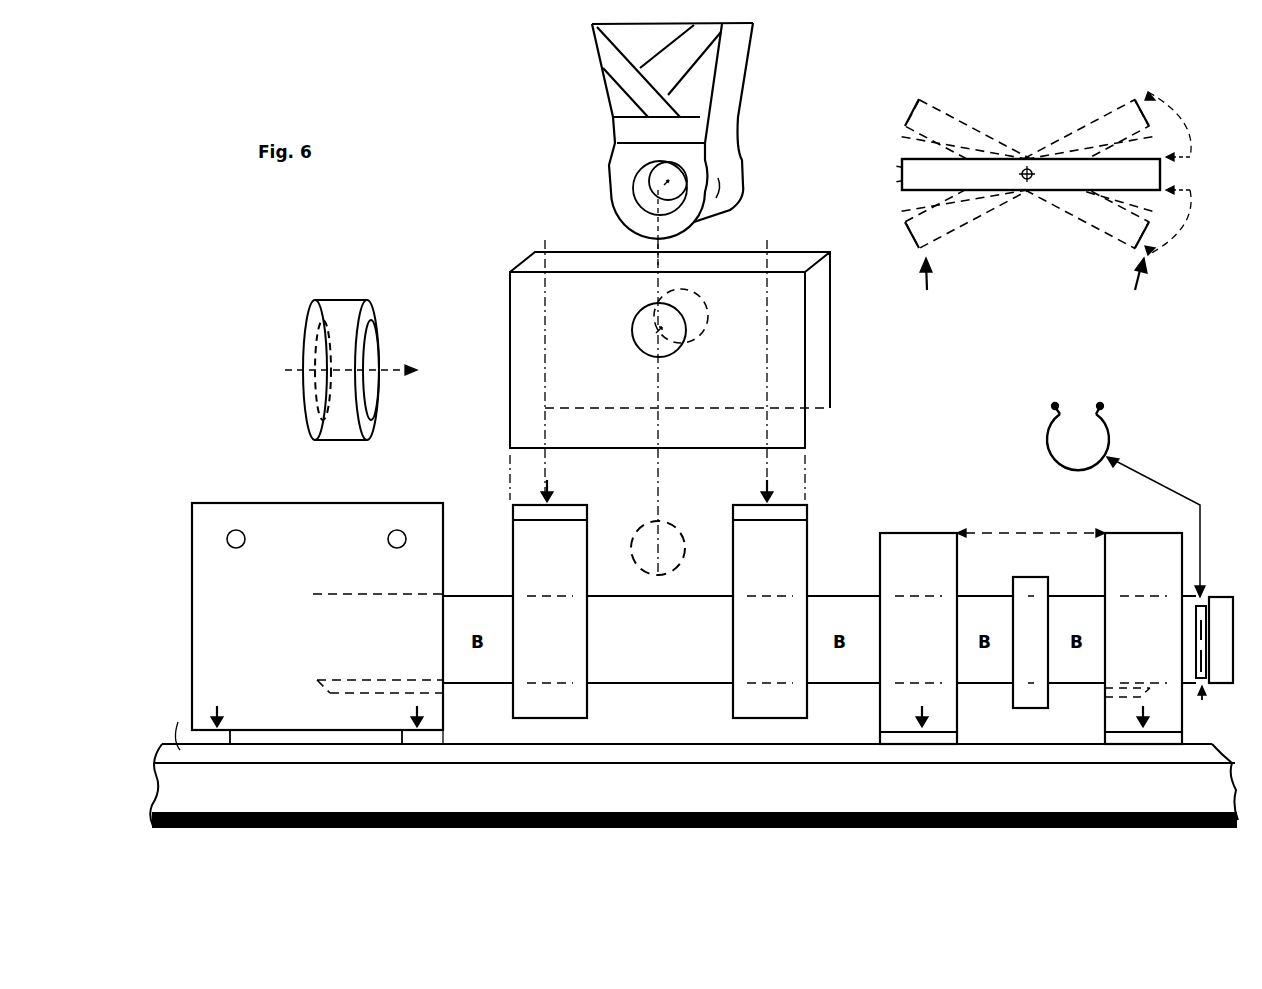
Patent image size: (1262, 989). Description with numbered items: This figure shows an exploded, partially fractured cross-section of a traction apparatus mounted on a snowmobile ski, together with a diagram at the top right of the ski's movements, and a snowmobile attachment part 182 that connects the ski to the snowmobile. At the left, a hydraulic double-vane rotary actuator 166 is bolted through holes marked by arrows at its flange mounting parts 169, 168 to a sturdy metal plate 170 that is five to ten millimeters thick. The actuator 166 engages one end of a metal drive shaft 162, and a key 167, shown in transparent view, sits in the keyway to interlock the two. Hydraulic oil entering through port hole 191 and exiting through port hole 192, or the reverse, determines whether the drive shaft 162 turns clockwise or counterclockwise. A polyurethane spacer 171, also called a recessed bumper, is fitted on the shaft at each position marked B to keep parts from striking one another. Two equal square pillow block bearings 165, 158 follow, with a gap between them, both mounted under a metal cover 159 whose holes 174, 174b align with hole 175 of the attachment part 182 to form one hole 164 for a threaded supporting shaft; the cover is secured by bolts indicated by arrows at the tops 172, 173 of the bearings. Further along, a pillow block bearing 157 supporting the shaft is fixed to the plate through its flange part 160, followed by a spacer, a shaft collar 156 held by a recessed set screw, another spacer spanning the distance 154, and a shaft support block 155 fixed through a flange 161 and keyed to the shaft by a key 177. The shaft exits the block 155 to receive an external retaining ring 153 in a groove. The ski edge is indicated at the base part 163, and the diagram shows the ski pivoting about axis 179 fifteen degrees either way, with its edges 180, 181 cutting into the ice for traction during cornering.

The external retaining ring 153 is at (1110, 442).
The spacing between bearing blocks 154 is at (1031, 532).
The shaft support block 155 is at (1132, 540).
The shaft collar 156 is at (1030, 585).
The pillow block bearing 157 is at (880, 577).
The pillow block bearing 158 is at (807, 555).
The metal cover 159 is at (805, 431).
The flange part 160 is at (880, 741).
The fastener 161 is at (1110, 741).
The drive shaft 162 is at (819, 639).
The base part 163 is at (557, 813).
The hole 164 is at (686, 557).
The pillow block bearing 165 is at (587, 576).
The hydraulic double-vane rotary actuator 166 is at (443, 550).
The key 167 is at (388, 683).
The flange mounting part 168 is at (445, 737).
The flange mounting part 169 is at (228, 738).
The metal plate 170 is at (180, 725).
The polyurethane spacer 171 is at (358, 298).
The top of pillow block bearing 172 is at (513, 512).
The top of pillow block bearing 173 is at (733, 512).
The hole 174 is at (675, 337).
The hole 174b is at (702, 295).
The hole 175 is at (648, 184).
The key 177 is at (1104, 688).
The axis 179 is at (1036, 178).
The ski edge 180 is at (931, 282).
The ski edge 181 is at (1136, 282).
The snowmobile attachment part 182 is at (736, 82).
The port hole 191 is at (243, 547).
The port hole 192 is at (388, 539).